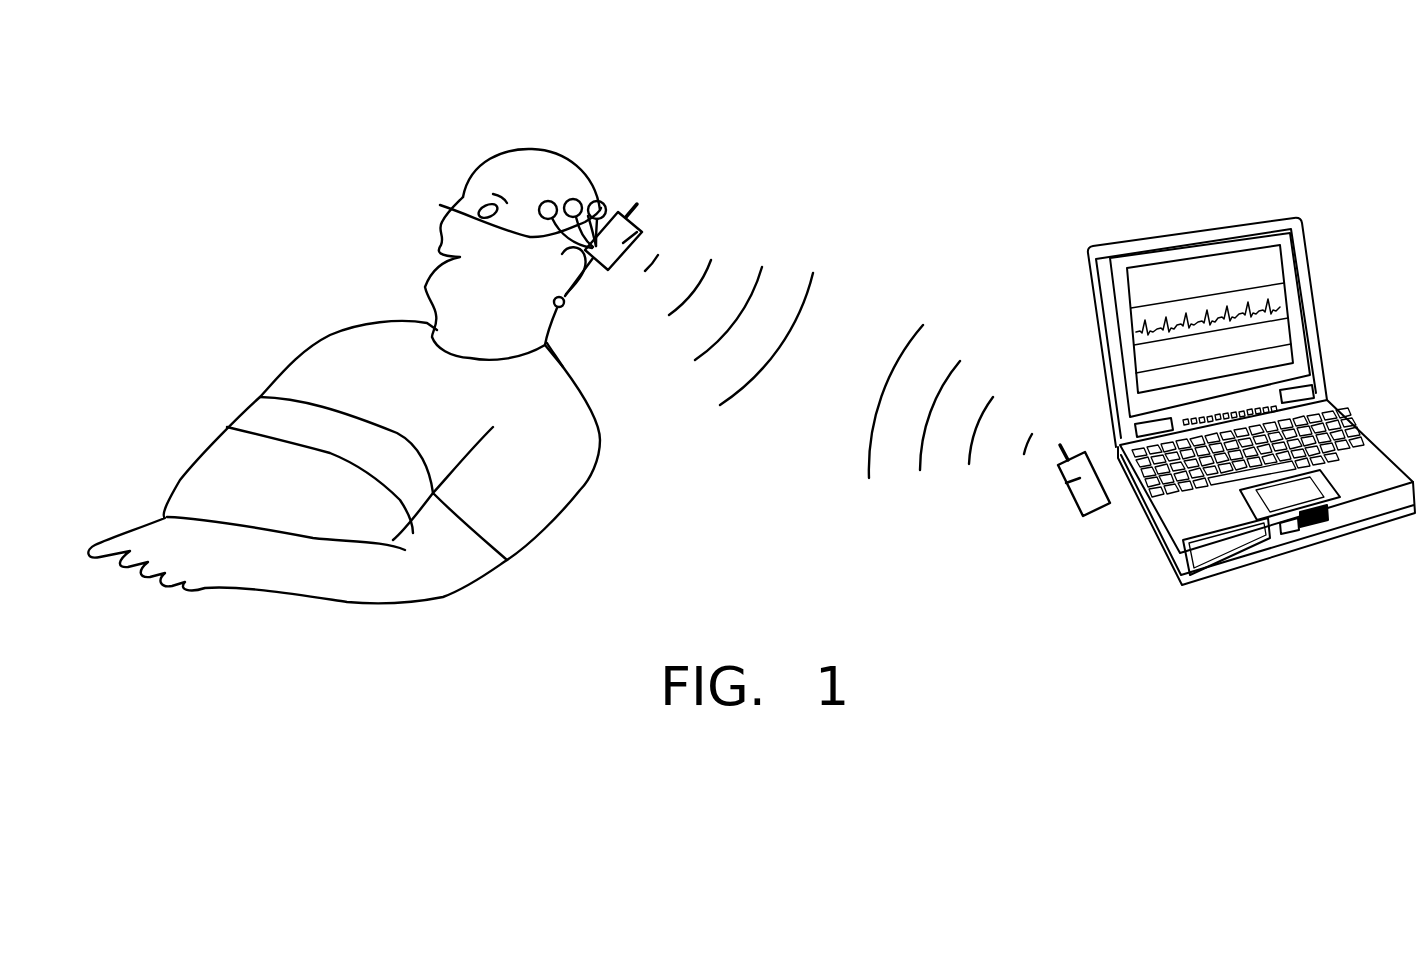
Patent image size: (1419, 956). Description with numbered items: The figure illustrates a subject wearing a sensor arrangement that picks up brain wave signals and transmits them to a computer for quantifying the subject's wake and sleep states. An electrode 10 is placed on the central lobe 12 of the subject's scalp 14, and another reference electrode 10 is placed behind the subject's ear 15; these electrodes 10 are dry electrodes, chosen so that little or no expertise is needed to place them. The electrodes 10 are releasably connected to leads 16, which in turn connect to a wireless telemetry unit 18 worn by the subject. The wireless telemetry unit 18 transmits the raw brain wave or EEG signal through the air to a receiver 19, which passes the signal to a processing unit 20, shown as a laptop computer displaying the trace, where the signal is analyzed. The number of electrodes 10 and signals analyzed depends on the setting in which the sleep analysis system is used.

The electrode 10 is at (570, 197).
The central lobe 12 is at (590, 207).
The scalp 14 is at (520, 163).
The ear 15 is at (563, 307).
The leads 16 is at (440, 205).
The wireless telemetry unit 18 is at (639, 231).
The receiver 19 is at (1068, 488).
The processing unit 20 is at (1313, 313).